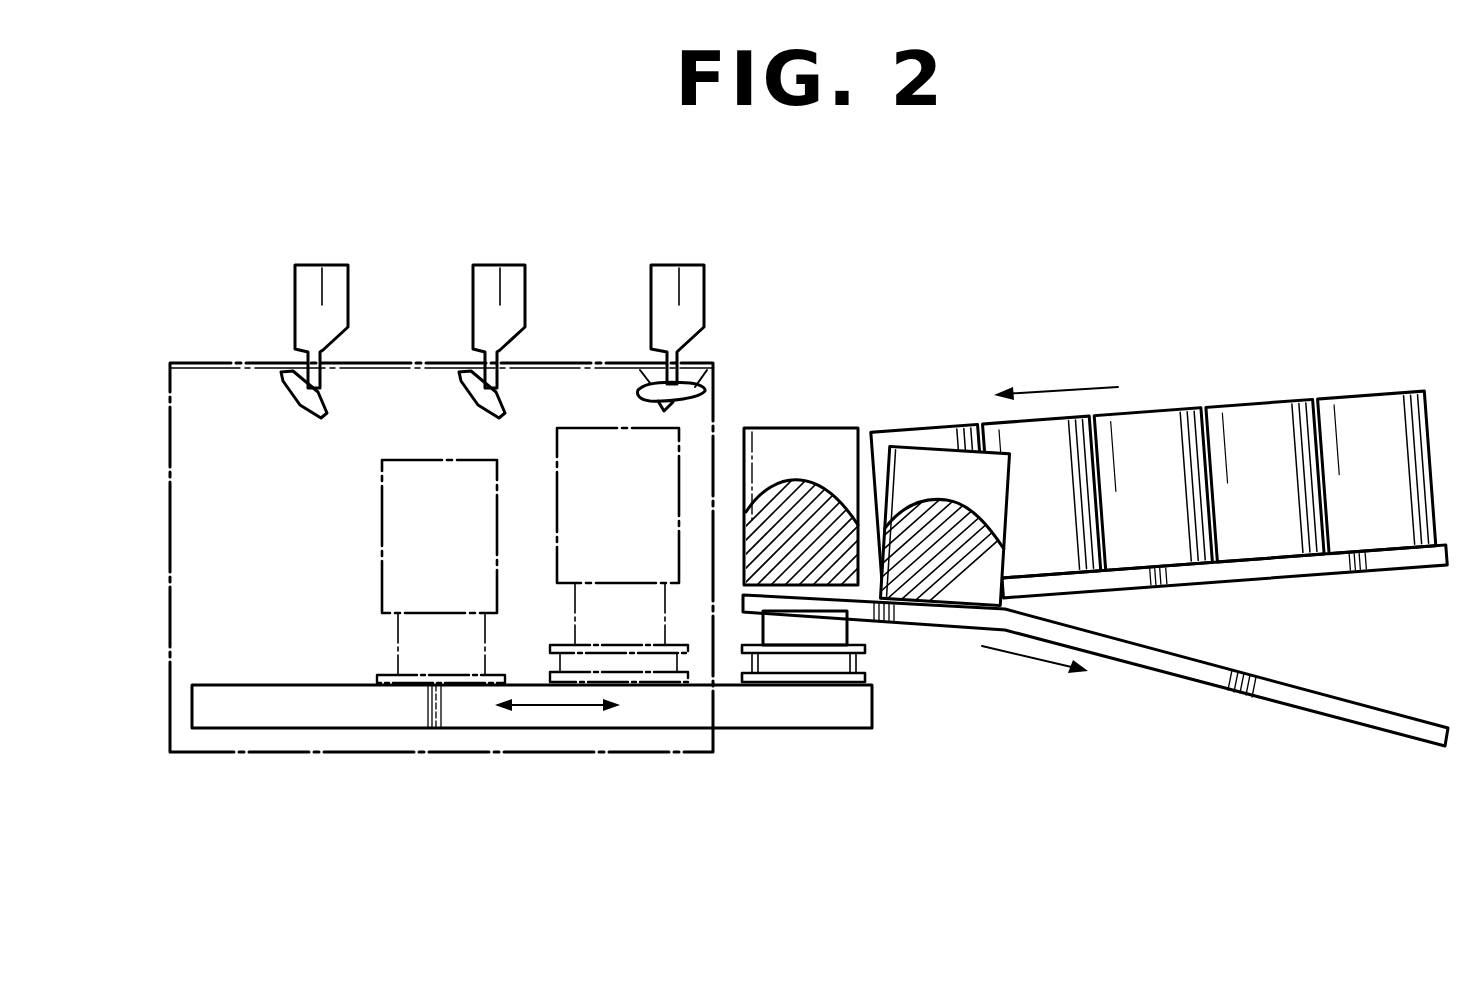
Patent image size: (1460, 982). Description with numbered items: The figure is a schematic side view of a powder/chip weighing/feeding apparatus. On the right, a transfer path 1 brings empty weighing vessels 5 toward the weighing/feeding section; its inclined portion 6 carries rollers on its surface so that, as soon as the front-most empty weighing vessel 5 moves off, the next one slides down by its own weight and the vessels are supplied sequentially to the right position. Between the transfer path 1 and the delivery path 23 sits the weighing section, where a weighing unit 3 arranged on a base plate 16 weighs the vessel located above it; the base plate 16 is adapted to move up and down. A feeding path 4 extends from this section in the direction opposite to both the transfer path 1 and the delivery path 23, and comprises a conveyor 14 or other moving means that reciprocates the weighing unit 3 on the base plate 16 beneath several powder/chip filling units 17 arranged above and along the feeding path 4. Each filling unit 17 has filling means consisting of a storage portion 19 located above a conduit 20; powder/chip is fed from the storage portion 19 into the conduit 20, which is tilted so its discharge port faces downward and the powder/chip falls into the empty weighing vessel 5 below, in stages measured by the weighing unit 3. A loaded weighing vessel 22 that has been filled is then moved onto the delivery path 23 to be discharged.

The transfer path 1 is at (1158, 478).
The weighing unit 3 is at (830, 628).
The feeding path 4 is at (394, 740).
The empty weighing vessel 5 is at (1347, 415).
The inclined portion 6 is at (1300, 565).
The conveyor 14 is at (232, 710).
The base plate 16 is at (858, 665).
The powder/chip filling unit 17 is at (551, 295).
The storage portion 19 is at (692, 293).
The conduit 20 is at (650, 390).
The loaded weighing vessel 22 is at (792, 445).
The delivery path 23 is at (1140, 680).